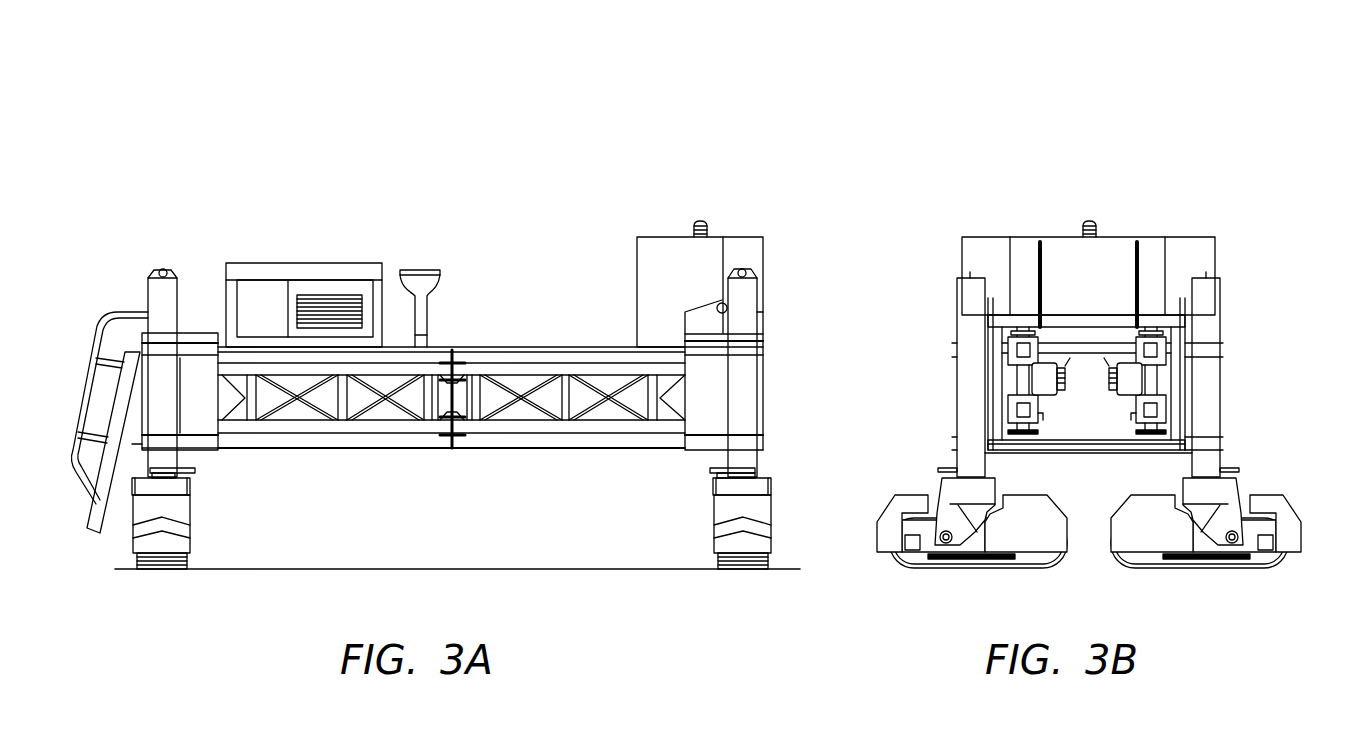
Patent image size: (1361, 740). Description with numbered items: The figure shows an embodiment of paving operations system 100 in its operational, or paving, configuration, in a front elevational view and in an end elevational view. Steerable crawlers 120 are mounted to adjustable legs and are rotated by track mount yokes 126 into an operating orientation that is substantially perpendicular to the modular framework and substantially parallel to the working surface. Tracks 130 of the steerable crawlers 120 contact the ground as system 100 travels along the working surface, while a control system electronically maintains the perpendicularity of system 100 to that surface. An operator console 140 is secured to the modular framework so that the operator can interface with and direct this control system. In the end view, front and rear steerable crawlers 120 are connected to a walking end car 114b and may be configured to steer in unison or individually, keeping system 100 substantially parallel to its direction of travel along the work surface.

In FIG. 3A, the paving operations system 100 is at (255, 108).
In FIG. 3B, the paving operations system 100 is at (1213, 170).
In FIG. 3A, the walking end car 114b is at (713, 395).
In FIG. 3B, the walking end car 114b is at (1175, 320).
In FIG. 3A, the steerable crawlers 120 is at (720, 510).
In FIG. 3B, the steerable crawlers 120 is at (892, 525).
In FIG. 3A, the track mount yokes 126 is at (716, 488).
In FIG. 3B, the track mount yokes 126 is at (952, 488).
In FIG. 3A, the tracks 130 is at (745, 570).
In FIG. 3B, the tracks 130 is at (970, 568).
In FIG. 3A, the operator console 140 is at (423, 268).